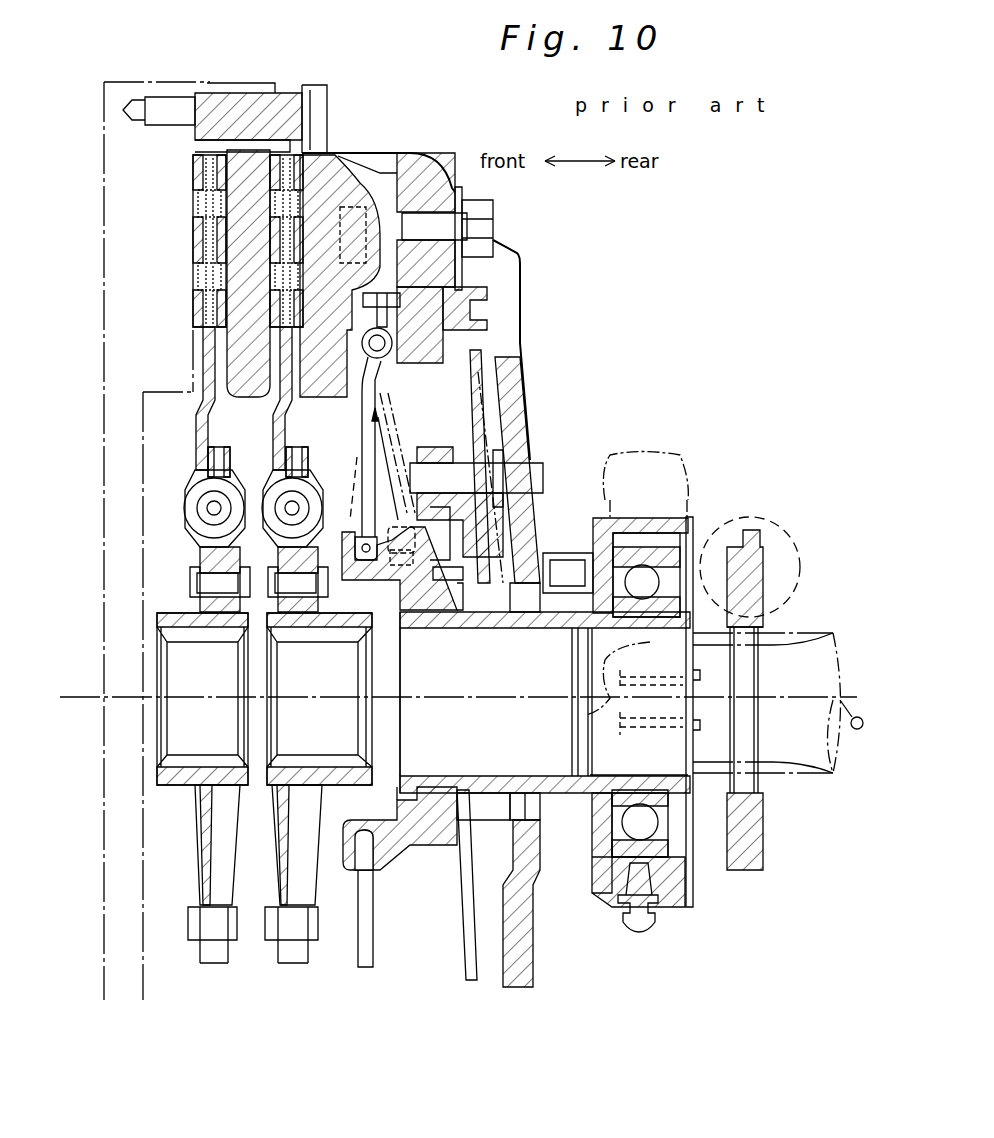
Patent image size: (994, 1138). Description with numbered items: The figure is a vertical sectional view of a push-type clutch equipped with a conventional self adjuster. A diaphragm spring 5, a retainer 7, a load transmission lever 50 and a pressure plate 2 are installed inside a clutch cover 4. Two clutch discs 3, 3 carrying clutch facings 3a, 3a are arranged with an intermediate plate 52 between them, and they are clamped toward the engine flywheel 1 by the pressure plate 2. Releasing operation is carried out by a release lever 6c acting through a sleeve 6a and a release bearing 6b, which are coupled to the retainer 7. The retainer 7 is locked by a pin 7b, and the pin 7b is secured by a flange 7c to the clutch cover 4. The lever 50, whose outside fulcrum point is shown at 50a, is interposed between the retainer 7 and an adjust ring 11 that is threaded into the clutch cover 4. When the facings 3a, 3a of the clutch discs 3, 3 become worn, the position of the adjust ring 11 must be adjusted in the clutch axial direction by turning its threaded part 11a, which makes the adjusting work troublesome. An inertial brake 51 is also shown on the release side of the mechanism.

The engine flywheel 1 is at (120, 303).
The pressure plate 2 is at (337, 187).
The clutch discs 3 is at (185, 472).
The clutch facings 3a is at (193, 247).
The clutch cover 4 is at (520, 343).
The diaphragm spring 5 is at (513, 402).
The sleeve 6a is at (490, 628).
The release bearing 6b is at (765, 598).
The release lever 6c is at (605, 502).
The retainer 7 is at (445, 447).
The pin 7b is at (417, 447).
The flange 7c is at (505, 460).
The adjust ring 11 is at (490, 322).
The threaded part 11a is at (490, 297).
The lever 50 is at (365, 453).
The outside fulcrum point 50a is at (465, 466).
The inertial brake 51 is at (776, 520).
The intermediate plate 52 is at (250, 165).